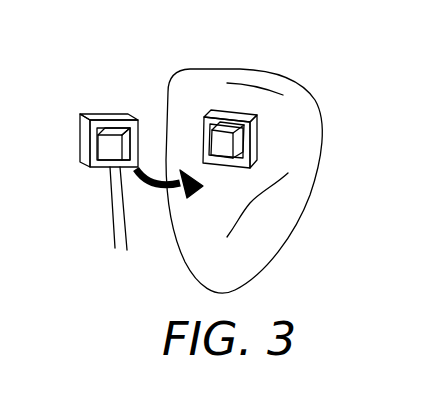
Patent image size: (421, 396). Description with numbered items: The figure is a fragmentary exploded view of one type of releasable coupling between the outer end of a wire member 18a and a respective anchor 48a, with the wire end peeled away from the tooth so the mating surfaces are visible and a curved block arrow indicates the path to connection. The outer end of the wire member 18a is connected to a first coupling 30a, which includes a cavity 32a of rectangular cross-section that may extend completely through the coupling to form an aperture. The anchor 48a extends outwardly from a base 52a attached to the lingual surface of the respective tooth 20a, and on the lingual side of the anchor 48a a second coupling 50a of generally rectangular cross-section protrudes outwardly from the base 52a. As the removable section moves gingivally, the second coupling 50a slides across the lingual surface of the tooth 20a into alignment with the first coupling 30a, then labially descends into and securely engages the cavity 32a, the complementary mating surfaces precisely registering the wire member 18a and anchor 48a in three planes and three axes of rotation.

The wire member 18a is at (110, 210).
The tooth 20a is at (307, 110).
The first coupling 30a is at (129, 113).
The cavity 32a is at (112, 127).
The anchor 48a is at (246, 94).
The second coupling 50a is at (225, 113).
The base 52a is at (258, 138).